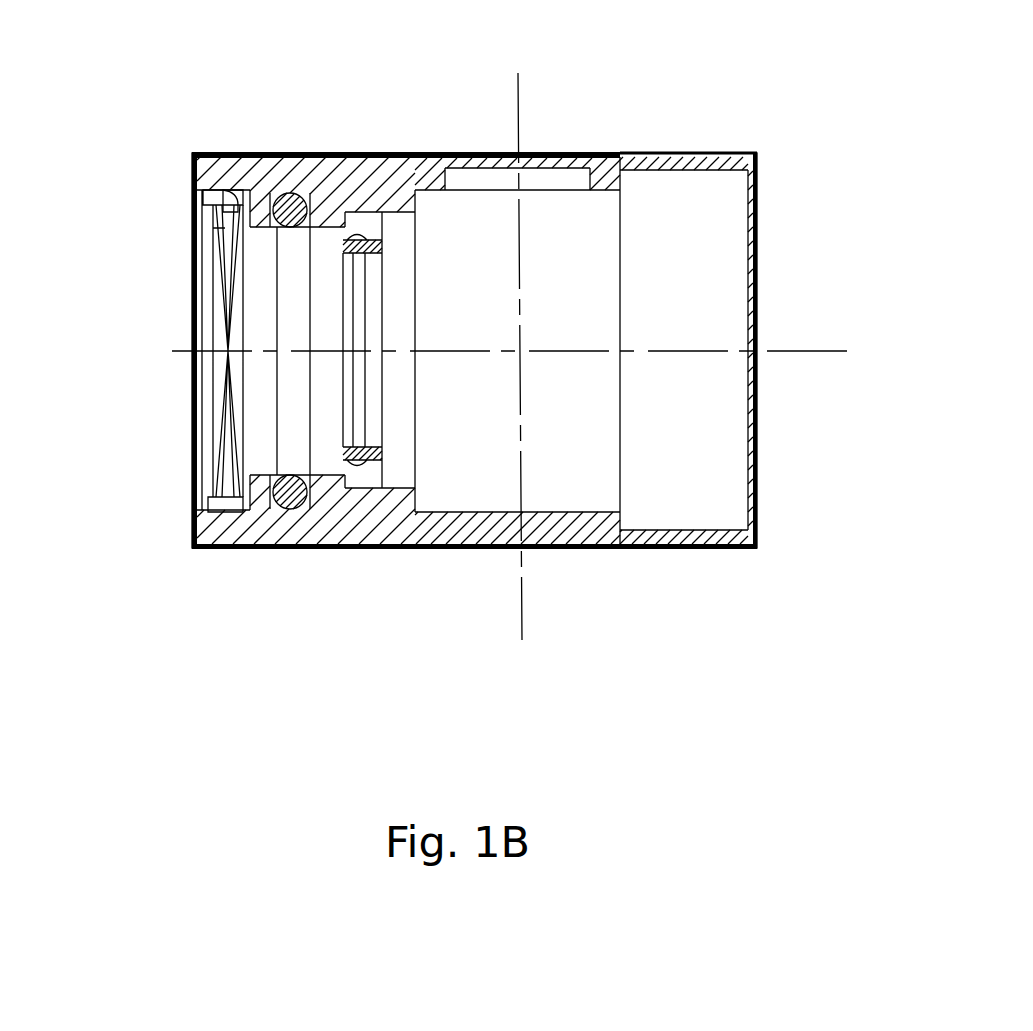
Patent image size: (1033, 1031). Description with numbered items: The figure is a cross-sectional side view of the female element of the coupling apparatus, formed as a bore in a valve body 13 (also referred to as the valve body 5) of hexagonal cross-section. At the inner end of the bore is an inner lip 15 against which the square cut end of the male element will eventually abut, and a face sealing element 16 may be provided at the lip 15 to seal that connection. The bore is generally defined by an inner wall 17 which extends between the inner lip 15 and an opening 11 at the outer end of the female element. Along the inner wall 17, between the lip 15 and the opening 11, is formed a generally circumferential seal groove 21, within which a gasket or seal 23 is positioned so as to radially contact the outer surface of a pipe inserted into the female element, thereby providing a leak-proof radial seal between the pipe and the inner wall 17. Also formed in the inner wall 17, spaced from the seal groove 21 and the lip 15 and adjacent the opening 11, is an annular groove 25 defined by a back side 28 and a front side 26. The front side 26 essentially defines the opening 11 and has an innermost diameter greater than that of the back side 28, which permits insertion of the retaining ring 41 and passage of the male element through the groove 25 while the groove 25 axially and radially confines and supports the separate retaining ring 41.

The valve body 5 is at (590, 95).
The opening 11 is at (202, 507).
The valve body 13 is at (493, 550).
The inner lip 15 is at (343, 240).
The face sealing element 16 is at (380, 553).
The inner wall 17 is at (388, 153).
The seal groove 21 is at (307, 440).
The seal 23 is at (288, 548).
The annular groove 25 is at (213, 153).
The front side 26 is at (203, 220).
The back side 28 is at (252, 157).
The retaining ring 41 is at (217, 383).